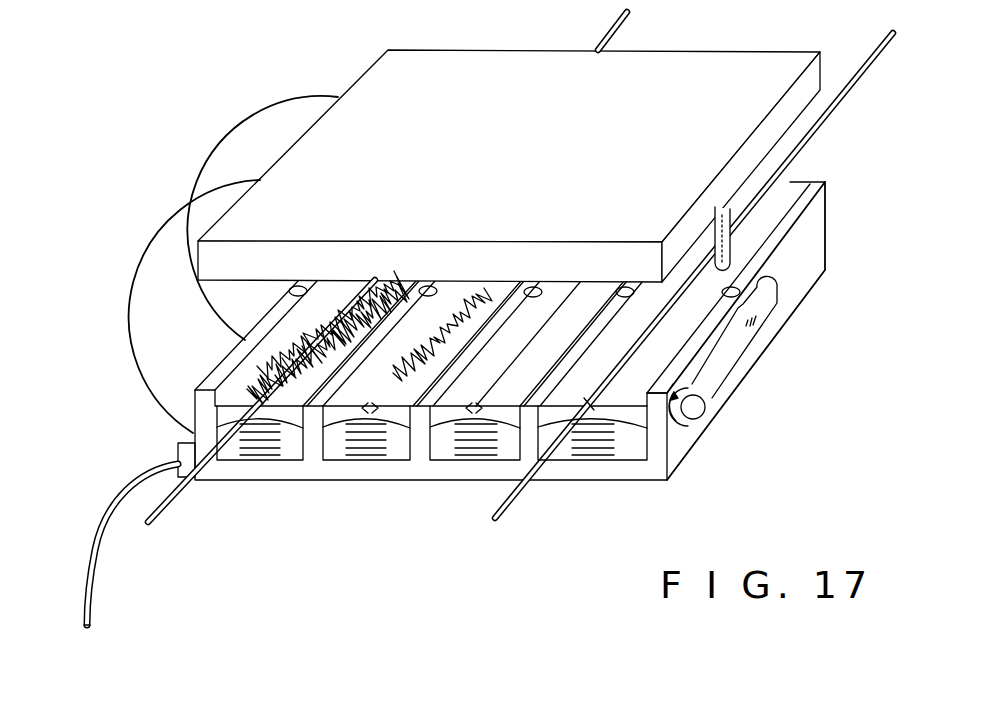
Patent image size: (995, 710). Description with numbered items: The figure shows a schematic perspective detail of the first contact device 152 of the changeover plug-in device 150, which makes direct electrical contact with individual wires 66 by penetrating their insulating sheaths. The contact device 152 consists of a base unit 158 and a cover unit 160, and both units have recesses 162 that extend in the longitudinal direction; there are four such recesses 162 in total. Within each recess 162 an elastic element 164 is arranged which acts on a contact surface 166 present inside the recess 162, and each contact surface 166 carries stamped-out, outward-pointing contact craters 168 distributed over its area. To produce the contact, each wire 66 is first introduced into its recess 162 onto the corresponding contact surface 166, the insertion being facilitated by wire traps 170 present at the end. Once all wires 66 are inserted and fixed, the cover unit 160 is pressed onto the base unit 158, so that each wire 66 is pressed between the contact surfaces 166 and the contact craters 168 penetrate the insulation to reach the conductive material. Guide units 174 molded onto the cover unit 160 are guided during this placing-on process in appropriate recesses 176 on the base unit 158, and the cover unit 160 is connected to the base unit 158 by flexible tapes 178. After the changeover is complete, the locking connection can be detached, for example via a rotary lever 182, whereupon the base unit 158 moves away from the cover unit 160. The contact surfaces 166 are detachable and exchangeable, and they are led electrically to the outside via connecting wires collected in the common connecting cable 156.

The changeover plug-in device 150 is at (240, 78).
The first contact device 152 is at (212, 357).
The connecting cable 156 is at (100, 556).
The base unit 158 is at (826, 270).
The cover unit 160 is at (710, 60).
The recess 162 is at (681, 426).
The elastic element 164 is at (265, 450).
The contact surface 166 is at (687, 388).
The contact crater 168 is at (280, 397).
The wire trap 170 is at (587, 404).
The guide unit 174 is at (728, 218).
The recess (guide recess) 176 is at (740, 292).
The flexible tape 178 is at (211, 153).
The rotary lever 182 is at (736, 356).
The wire 66 is at (608, 22).